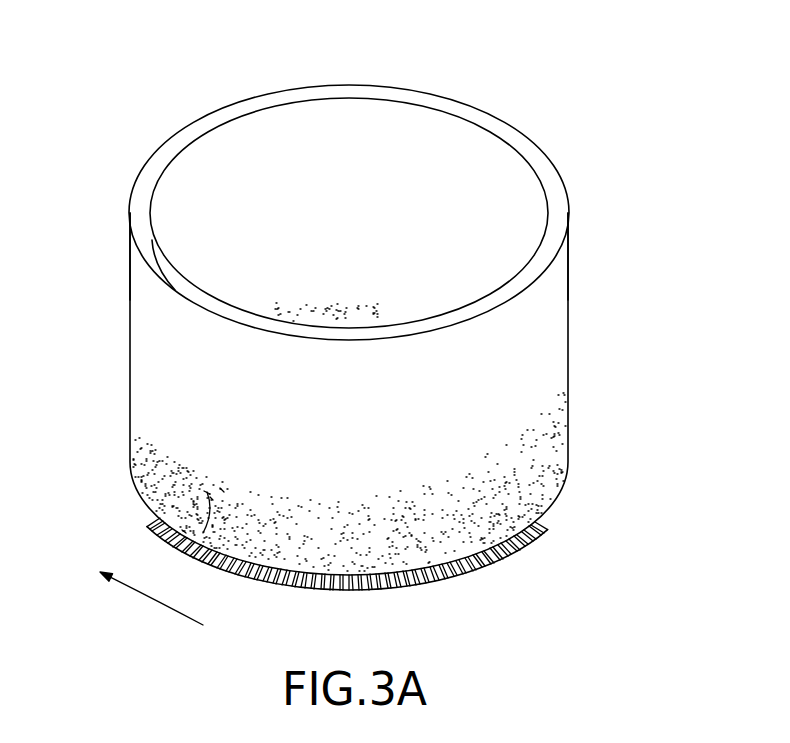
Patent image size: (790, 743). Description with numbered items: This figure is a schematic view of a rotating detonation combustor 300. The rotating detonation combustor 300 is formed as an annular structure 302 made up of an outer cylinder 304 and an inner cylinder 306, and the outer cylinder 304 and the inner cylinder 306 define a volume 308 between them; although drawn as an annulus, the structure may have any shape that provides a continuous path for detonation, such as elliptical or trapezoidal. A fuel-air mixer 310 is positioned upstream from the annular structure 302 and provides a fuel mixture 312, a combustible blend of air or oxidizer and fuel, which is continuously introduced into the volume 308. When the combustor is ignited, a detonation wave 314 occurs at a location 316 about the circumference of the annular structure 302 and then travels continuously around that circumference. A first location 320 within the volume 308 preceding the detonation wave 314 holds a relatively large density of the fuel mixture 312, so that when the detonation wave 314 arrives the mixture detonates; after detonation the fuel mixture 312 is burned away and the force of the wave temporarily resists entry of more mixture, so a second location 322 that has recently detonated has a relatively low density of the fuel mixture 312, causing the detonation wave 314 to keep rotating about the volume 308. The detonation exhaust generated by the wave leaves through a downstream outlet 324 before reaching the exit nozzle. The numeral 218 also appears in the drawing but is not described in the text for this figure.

The rotating detonation combustor 300 is at (563, 112).
The annular structure 302 is at (142, 148).
The outer cylinder 304 is at (136, 244).
The inner cylinder 306 is at (155, 189).
The volume 308 is at (165, 282).
The fuel-air mixer 310 is at (552, 541).
The fuel mixture 312 is at (204, 491).
The detonation wave 314 is at (210, 497).
The location 316 is at (210, 490).
The first location 320 is at (182, 530).
The second location 322 is at (220, 488).
The downstream outlet 324 is at (567, 190).
The flow direction 218 is at (143, 600).